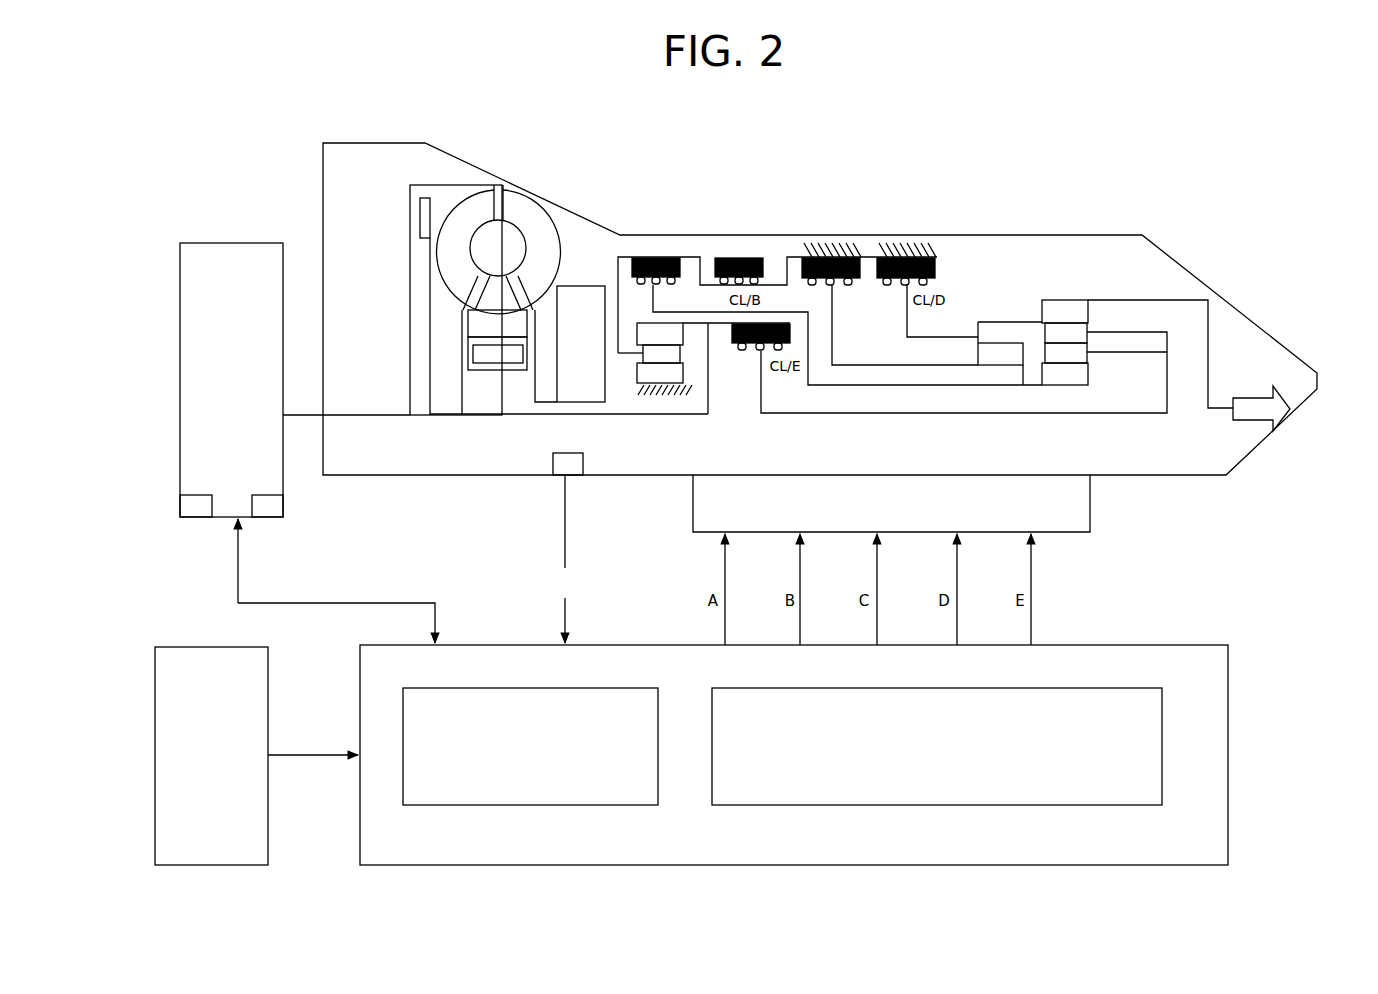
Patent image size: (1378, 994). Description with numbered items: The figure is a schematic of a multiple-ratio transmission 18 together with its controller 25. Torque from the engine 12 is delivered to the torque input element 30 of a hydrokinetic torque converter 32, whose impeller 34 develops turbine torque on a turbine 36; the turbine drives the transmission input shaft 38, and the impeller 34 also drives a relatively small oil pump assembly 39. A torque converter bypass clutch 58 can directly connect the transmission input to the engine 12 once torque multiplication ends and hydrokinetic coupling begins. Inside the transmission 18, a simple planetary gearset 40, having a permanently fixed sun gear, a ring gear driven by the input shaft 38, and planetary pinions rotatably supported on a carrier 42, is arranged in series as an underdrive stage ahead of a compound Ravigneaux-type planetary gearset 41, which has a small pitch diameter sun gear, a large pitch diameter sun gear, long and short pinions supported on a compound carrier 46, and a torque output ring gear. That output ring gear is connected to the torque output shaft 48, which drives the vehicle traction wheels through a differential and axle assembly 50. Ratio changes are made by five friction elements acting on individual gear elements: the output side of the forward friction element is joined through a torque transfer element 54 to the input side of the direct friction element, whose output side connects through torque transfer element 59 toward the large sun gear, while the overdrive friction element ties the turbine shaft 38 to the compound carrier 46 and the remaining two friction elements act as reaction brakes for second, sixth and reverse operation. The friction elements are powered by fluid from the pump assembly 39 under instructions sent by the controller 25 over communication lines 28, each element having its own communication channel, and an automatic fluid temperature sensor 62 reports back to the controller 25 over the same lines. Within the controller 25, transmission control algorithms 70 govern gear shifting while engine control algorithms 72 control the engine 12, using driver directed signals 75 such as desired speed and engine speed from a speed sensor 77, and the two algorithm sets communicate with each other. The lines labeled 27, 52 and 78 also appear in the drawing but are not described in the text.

The engine 12 is at (237, 242).
The transmission 18 is at (964, 234).
The controller 25 is at (1160, 644).
The engine control signal line 27 is at (236, 572).
The communication lines 28 is at (499, 570).
The torque input element 30 is at (388, 417).
The hydrokinetic torque converter 32 is at (566, 210).
The impeller 34 is at (556, 270).
The turbine 36 is at (464, 270).
The transmission input shaft 38 is at (600, 414).
The oil pump assembly 39 is at (587, 285).
The simple planetary gearset 40 is at (688, 377).
The compound planetary gearset 41 is at (1093, 376).
The carrier 42 is at (616, 257).
The compound carrier 46 is at (1170, 352).
The torque output shaft 48 is at (1217, 407).
The differential and axle assembly 50 is at (895, 363).
The intermediate shaft 52 is at (828, 414).
The torque transfer element 54 is at (697, 266).
The torque converter bypass clutch 58 is at (425, 182).
The torque transfer element 59 is at (792, 262).
The automatic fluid temperature sensor 62 is at (552, 462).
The transmission control algorithms 70 is at (1063, 806).
The engine control algorithms 72 is at (465, 806).
The driver directed signals 75 is at (270, 843).
The speed sensor 77 is at (198, 493).
The engine sensor 78 is at (262, 495).